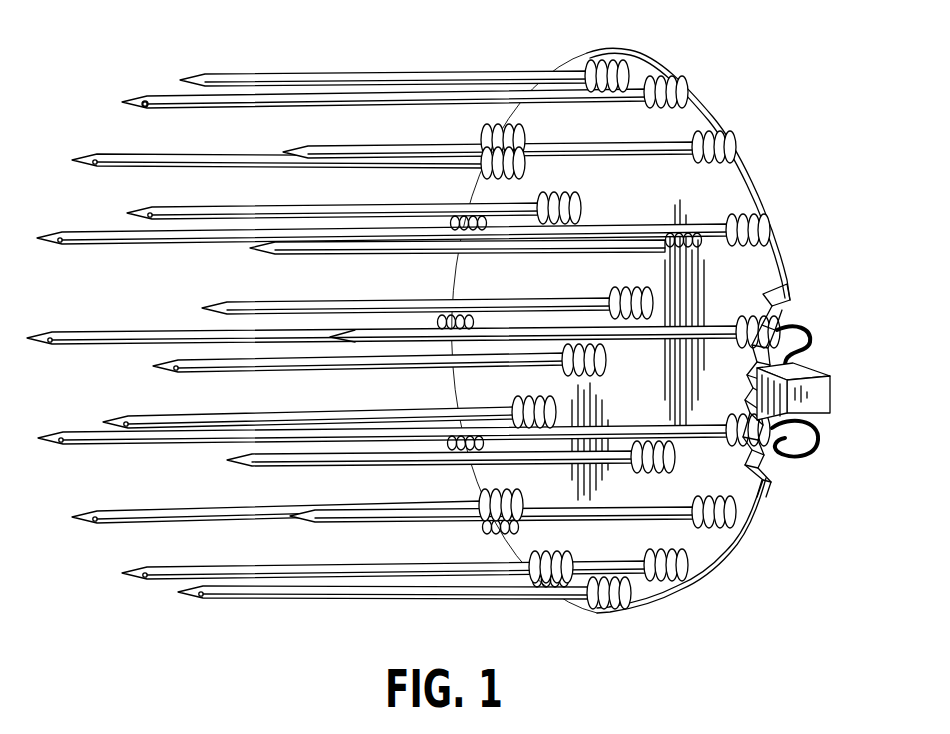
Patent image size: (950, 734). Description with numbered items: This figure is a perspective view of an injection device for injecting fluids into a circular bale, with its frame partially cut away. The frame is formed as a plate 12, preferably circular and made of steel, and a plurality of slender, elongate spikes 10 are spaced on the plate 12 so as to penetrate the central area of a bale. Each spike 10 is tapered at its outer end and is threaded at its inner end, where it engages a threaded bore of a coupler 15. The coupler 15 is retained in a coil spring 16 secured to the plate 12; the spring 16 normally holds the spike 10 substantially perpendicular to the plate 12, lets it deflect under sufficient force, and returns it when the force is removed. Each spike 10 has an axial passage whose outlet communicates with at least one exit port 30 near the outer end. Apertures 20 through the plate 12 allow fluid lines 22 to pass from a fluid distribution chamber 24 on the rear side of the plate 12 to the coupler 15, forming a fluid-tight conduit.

The spike 10 is at (383, 333).
The plate 12 is at (688, 540).
The coupler 15 is at (634, 74).
The coil spring 16 is at (606, 56).
The aperture 20 is at (772, 300).
The fluid line 22 is at (810, 344).
The fluid distribution chamber 24 is at (826, 408).
The exit port 30 is at (143, 108).